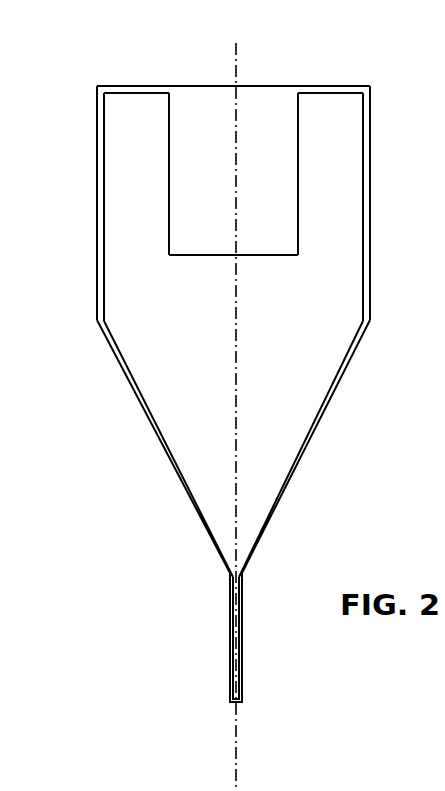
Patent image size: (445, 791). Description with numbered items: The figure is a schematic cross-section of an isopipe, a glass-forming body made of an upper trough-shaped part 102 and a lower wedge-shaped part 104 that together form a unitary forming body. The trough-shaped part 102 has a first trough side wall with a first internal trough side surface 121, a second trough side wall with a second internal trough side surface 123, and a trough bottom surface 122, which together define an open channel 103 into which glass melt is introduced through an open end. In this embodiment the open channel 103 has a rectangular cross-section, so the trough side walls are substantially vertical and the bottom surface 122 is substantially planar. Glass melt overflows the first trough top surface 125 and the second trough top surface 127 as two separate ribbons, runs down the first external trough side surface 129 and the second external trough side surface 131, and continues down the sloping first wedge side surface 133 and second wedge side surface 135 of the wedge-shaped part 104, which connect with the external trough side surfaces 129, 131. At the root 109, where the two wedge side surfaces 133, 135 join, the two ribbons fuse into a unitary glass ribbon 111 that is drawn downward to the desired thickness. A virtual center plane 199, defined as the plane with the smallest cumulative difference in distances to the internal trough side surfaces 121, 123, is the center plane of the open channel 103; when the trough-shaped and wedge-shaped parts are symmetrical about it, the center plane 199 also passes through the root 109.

The center plane 199 is at (241, 62).
The first trough top surface 125 is at (129, 87).
The second trough top surface 127 is at (332, 87).
The first external trough side surface 129 is at (98, 222).
The second external trough side surface 131 is at (372, 212).
The first wedge side surface 133 is at (160, 418).
The second wedge side surface 135 is at (308, 420).
The first internal trough side surface 121 is at (173, 222).
The second internal trough side surface 123 is at (295, 205).
The trough bottom surface 122 is at (219, 251).
The unitary glass ribbon 111 is at (245, 622).
The root 109 is at (230, 576).
The upper trough-shaped part 102 is at (337, 305).
The open channel 103 is at (233, 145).
The lower wedge-shaped part 104 is at (183, 360).